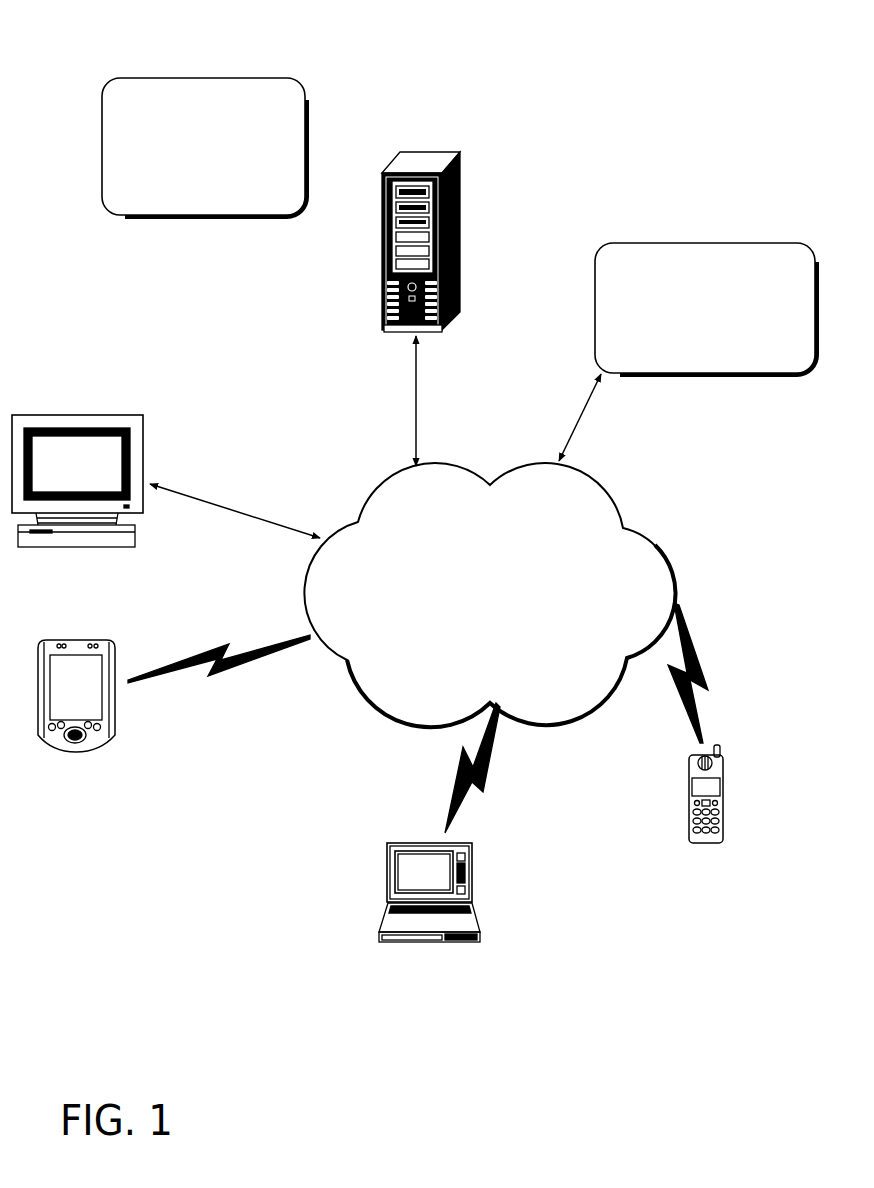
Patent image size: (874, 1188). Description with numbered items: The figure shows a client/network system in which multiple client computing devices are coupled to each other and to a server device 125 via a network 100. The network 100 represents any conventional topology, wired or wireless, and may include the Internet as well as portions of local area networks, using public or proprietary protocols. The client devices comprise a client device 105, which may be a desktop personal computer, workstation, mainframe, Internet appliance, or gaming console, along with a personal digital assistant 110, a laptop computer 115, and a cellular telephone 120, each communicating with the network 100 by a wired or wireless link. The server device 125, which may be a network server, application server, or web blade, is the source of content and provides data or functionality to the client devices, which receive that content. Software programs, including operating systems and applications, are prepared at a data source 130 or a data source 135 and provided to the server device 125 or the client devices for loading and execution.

The network 100 is at (489, 595).
The client device 105 is at (143, 450).
The personal digital assistant 110 is at (63, 638).
The laptop computer 115 is at (390, 843).
The cellular telephone 120 is at (690, 796).
The server device 125 is at (427, 152).
The data source 130 is at (133, 78).
The data source 135 is at (647, 242).